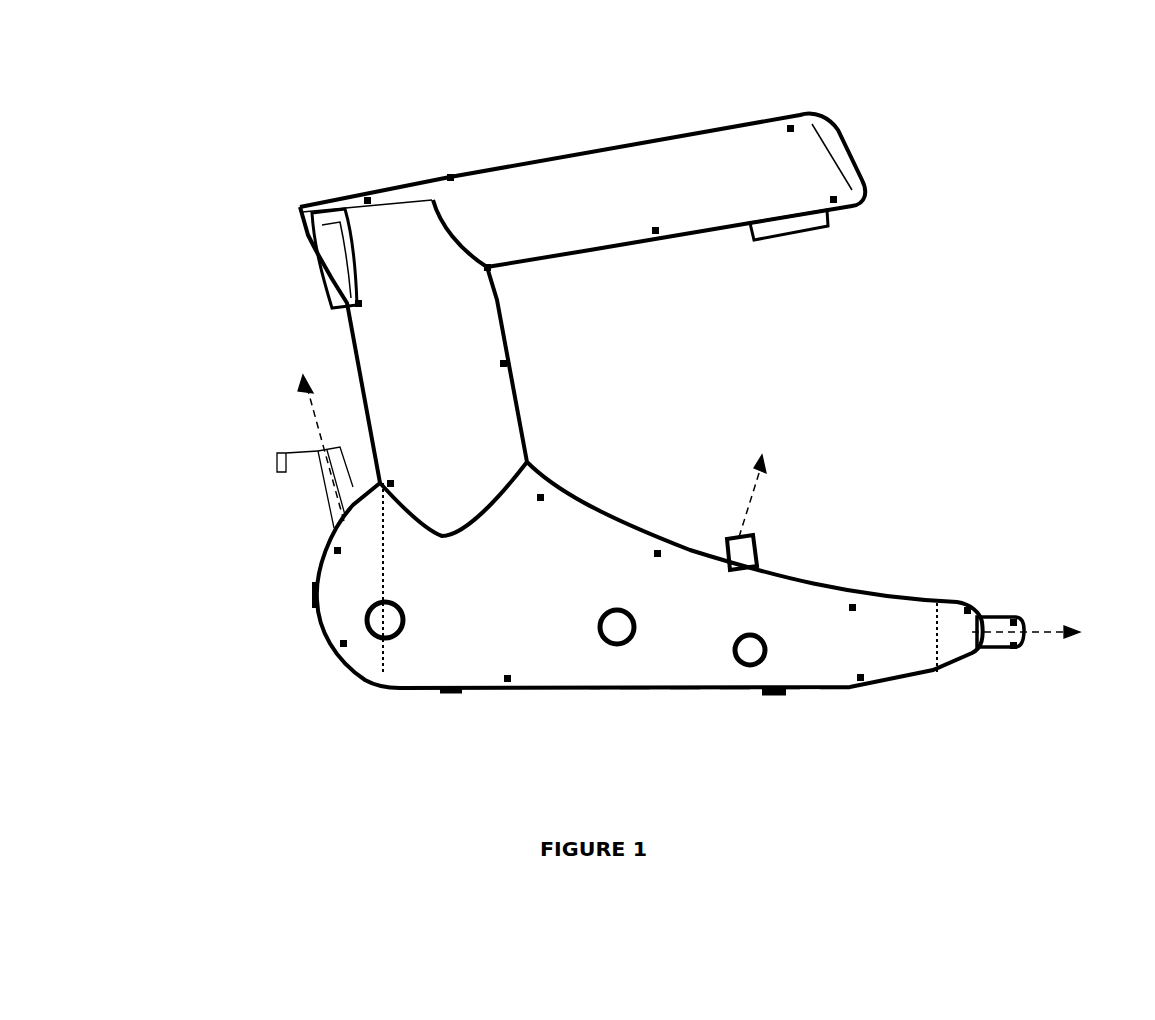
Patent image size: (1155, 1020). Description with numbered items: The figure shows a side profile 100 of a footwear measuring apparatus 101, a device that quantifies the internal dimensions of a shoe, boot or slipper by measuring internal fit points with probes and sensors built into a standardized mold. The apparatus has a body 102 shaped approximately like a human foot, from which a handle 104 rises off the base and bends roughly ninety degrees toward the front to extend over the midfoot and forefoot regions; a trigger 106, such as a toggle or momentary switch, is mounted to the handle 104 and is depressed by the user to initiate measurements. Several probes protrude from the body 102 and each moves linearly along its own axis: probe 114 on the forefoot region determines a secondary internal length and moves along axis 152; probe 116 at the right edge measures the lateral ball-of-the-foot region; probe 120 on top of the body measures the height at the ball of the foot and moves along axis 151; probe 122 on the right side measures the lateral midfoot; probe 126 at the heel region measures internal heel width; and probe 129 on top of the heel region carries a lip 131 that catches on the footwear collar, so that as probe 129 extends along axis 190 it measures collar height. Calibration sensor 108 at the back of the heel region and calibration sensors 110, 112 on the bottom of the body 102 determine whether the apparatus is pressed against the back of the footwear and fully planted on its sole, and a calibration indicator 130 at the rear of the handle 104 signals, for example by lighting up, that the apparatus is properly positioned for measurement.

The side profile 100 is at (617, 434).
The footwear measuring apparatus 101 is at (935, 108).
The body 102 is at (550, 657).
The handle 104 is at (592, 150).
The trigger 106 is at (780, 230).
The calibration sensor 108 is at (313, 593).
The calibration sensor 110 is at (450, 693).
The calibration sensor 112 is at (773, 697).
The probe 114 is at (983, 617).
The probe 116 is at (737, 640).
The probe 120 is at (727, 540).
The probe 122 is at (605, 612).
The probe 126 is at (364, 622).
The probe 129 is at (323, 508).
The calibration indicator 130 is at (327, 272).
The lip 131 is at (277, 458).
The axis 151 is at (755, 480).
The axis 152 is at (1040, 637).
The axis 190 is at (307, 417).